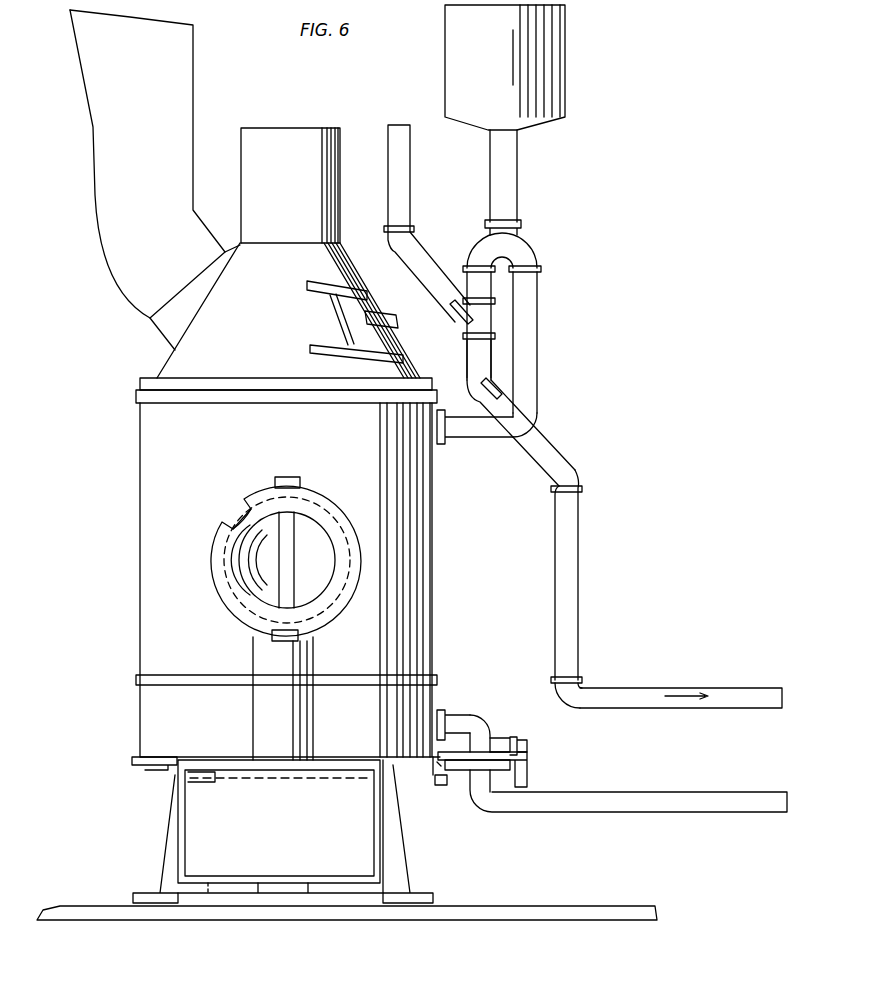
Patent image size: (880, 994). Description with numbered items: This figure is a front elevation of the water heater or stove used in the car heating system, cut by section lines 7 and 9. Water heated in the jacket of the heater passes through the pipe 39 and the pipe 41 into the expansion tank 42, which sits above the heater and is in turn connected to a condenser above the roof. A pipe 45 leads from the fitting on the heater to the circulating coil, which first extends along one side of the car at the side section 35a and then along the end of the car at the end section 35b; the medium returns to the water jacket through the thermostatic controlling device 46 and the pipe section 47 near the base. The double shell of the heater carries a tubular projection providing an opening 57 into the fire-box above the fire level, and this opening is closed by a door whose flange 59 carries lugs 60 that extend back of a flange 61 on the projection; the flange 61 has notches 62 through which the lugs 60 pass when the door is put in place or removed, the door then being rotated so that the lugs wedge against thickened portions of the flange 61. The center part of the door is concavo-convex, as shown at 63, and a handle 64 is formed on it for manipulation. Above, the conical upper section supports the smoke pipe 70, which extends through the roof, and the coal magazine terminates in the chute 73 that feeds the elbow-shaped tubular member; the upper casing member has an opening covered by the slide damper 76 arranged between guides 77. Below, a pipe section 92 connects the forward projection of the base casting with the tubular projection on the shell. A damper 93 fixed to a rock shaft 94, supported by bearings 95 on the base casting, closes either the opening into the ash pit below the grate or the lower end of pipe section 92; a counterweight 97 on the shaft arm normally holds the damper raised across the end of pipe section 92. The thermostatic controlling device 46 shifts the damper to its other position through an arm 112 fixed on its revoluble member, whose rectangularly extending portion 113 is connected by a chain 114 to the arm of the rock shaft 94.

The section line 7- 7 is at (475, 653).
The section line 9- 9 is at (287, 945).
The circulating coil side section 35a is at (632, 688).
The circulating coil end section 35b is at (625, 795).
The pipe 39 is at (537, 330).
The pipe 41 is at (517, 185).
The expansion tank 42 is at (560, 70).
The pipe 45 is at (470, 358).
The thermostatic controlling device 46 is at (497, 740).
The pipe section 47 is at (460, 715).
The opening 57 is at (215, 540).
The flange 59 is at (297, 478).
The lugs 60 is at (325, 500).
The flange 61 is at (320, 618).
The notches 62 is at (232, 518).
The concavo-convex center part 63 is at (258, 578).
The handle 64 is at (293, 582).
The smoke pipe 70 is at (262, 182).
The chute 73 is at (115, 204).
The slide damper 76 is at (350, 310).
The guides 77 is at (340, 280).
The pipe section 92 is at (315, 711).
The damper 93 is at (200, 818).
The rock shaft 94 is at (405, 780).
The bearings 95 is at (213, 784).
The counterweight 97 is at (440, 786).
The arm 112 is at (528, 775).
The rectangularly extending portion 113 is at (480, 770).
The chain 114 is at (433, 785).